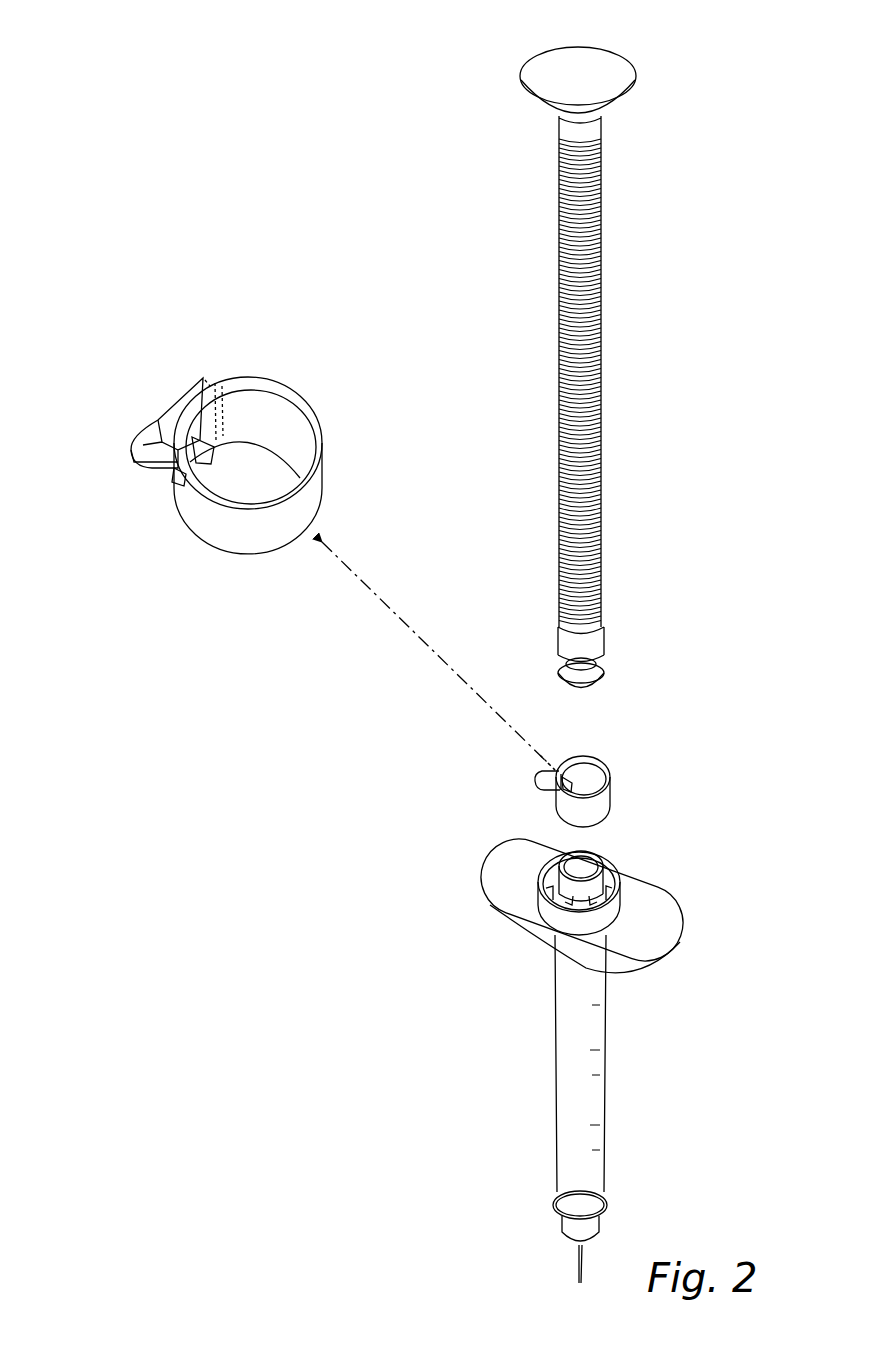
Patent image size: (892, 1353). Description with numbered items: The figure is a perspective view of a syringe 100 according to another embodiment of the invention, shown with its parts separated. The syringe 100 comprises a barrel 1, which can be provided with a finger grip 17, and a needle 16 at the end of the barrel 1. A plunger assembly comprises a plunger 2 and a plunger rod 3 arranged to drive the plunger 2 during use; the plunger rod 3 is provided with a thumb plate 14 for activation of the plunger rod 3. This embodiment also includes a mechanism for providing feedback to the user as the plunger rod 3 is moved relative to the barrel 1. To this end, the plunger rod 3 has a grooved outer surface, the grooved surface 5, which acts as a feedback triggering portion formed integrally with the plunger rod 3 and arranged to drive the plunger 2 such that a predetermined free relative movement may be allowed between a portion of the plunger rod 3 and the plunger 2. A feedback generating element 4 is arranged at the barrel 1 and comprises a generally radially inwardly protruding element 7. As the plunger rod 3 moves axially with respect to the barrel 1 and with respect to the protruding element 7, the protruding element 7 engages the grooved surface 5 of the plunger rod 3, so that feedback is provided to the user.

The syringe 100 is at (250, 119).
The plunger rod 3 is at (618, 321).
The thumb plate 14 is at (597, 72).
The grooved surface 5 is at (600, 350).
The plunger 2 is at (592, 648).
The feedback generating element 4 is at (221, 582).
The generally radially inwardly protruding element 7 is at (197, 458).
The barrel 1 is at (600, 1027).
The finger grip 17 is at (660, 937).
The needle 16 is at (578, 1255).